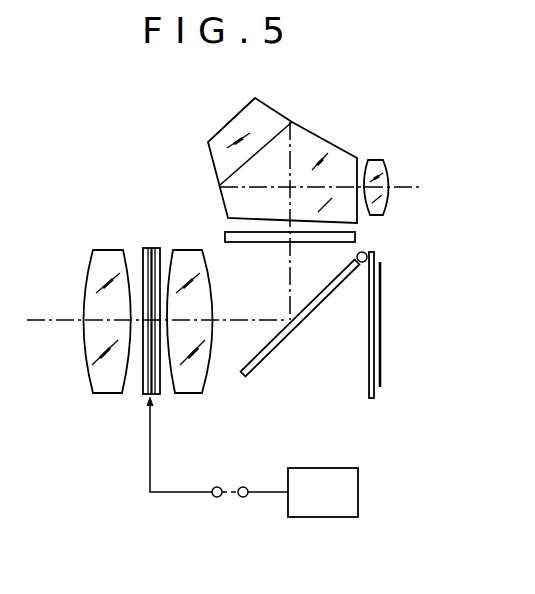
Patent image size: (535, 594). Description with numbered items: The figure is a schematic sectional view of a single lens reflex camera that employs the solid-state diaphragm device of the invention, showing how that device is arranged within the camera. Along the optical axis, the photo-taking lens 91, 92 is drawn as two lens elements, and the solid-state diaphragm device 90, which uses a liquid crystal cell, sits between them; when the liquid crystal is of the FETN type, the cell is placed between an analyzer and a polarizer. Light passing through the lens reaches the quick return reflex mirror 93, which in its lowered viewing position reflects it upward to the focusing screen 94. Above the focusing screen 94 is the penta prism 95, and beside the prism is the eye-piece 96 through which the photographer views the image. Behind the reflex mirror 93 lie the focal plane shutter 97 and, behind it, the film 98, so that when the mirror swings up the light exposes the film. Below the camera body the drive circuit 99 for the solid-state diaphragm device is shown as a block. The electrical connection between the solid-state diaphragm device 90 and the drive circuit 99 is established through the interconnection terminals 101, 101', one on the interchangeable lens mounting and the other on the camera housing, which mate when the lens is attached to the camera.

The solid-state diaphragm device 90 is at (153, 248).
The photo-taking lens 91 is at (110, 385).
The photo-taking lens 92 is at (188, 383).
The quick return reflex mirror 93 is at (268, 347).
The focusing screen 94 is at (353, 233).
The penta prism 95 is at (322, 142).
The eye-piece 96 is at (385, 172).
The focal plane shutter 97 is at (370, 337).
The film 98 is at (382, 328).
The drive circuit 99 is at (348, 497).
The interconnection terminal 101 is at (208, 515).
The interconnection terminal 101' is at (251, 525).